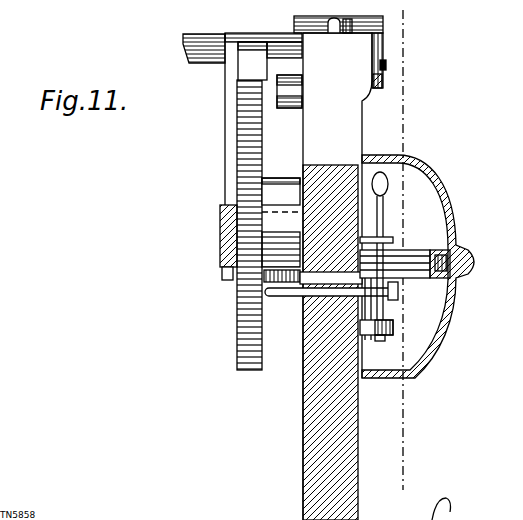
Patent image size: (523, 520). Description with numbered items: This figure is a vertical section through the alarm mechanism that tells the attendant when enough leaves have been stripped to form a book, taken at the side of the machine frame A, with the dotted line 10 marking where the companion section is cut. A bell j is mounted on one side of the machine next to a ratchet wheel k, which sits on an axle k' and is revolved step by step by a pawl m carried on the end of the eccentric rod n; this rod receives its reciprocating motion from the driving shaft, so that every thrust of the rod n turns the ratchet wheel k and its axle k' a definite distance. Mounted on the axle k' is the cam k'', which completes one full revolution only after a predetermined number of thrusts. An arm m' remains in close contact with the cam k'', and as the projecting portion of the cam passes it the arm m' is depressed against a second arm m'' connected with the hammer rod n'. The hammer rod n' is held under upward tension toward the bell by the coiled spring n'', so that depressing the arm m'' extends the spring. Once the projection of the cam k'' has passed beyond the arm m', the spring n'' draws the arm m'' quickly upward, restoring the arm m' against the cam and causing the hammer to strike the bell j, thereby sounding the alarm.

The section line 10 is at (407, 258).
The frame body A is at (340, 268).
The bell j is at (418, 266).
The eccentric rod n is at (207, 119).
The hammer rod n' is at (382, 207).
The coiled spring n'' is at (395, 282).
The pawl m is at (242, 70).
The arm m' is at (357, 267).
The arm m'' is at (331, 299).
The ratchet wheel k is at (257, 225).
The axle k' is at (209, 242).
The cam k'' is at (281, 222).